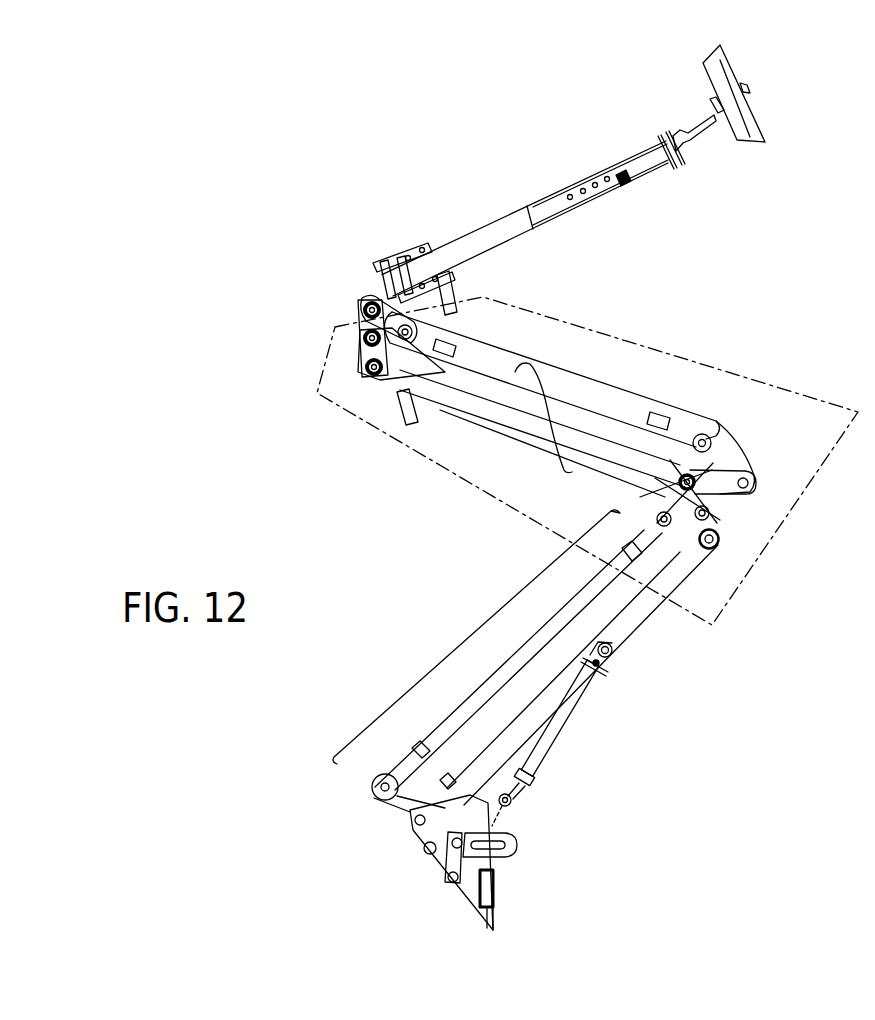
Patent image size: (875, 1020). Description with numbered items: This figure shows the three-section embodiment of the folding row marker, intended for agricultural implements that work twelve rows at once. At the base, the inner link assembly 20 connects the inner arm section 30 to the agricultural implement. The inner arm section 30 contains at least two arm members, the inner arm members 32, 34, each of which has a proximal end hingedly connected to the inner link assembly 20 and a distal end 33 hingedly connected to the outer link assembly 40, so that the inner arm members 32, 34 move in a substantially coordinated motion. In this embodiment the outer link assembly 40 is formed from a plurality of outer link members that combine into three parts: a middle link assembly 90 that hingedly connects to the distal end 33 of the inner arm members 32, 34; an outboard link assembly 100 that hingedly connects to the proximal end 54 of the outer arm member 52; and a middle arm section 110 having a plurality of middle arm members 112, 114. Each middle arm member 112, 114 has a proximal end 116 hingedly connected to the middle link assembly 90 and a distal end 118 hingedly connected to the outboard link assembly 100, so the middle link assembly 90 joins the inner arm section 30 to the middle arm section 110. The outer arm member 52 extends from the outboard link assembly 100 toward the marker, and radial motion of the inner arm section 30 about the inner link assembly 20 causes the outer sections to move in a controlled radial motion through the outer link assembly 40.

The inner link assembly 20 is at (517, 832).
The inner arm section 30 is at (478, 633).
The inner arm member 32 is at (647, 616).
The distal end 33 is at (714, 548).
The inner arm member 34 is at (548, 621).
The outer link assembly 40 is at (806, 393).
The outer arm member 52 is at (536, 205).
The proximal end 54 is at (408, 251).
The middle link assembly 90 is at (752, 415).
The outboard link assembly 100 is at (353, 253).
The middle arm section 110 is at (576, 374).
The middle arm member 112 is at (533, 437).
The middle arm member 114 is at (558, 426).
The proximal end 116 is at (670, 491).
The distal end 118 is at (423, 352).